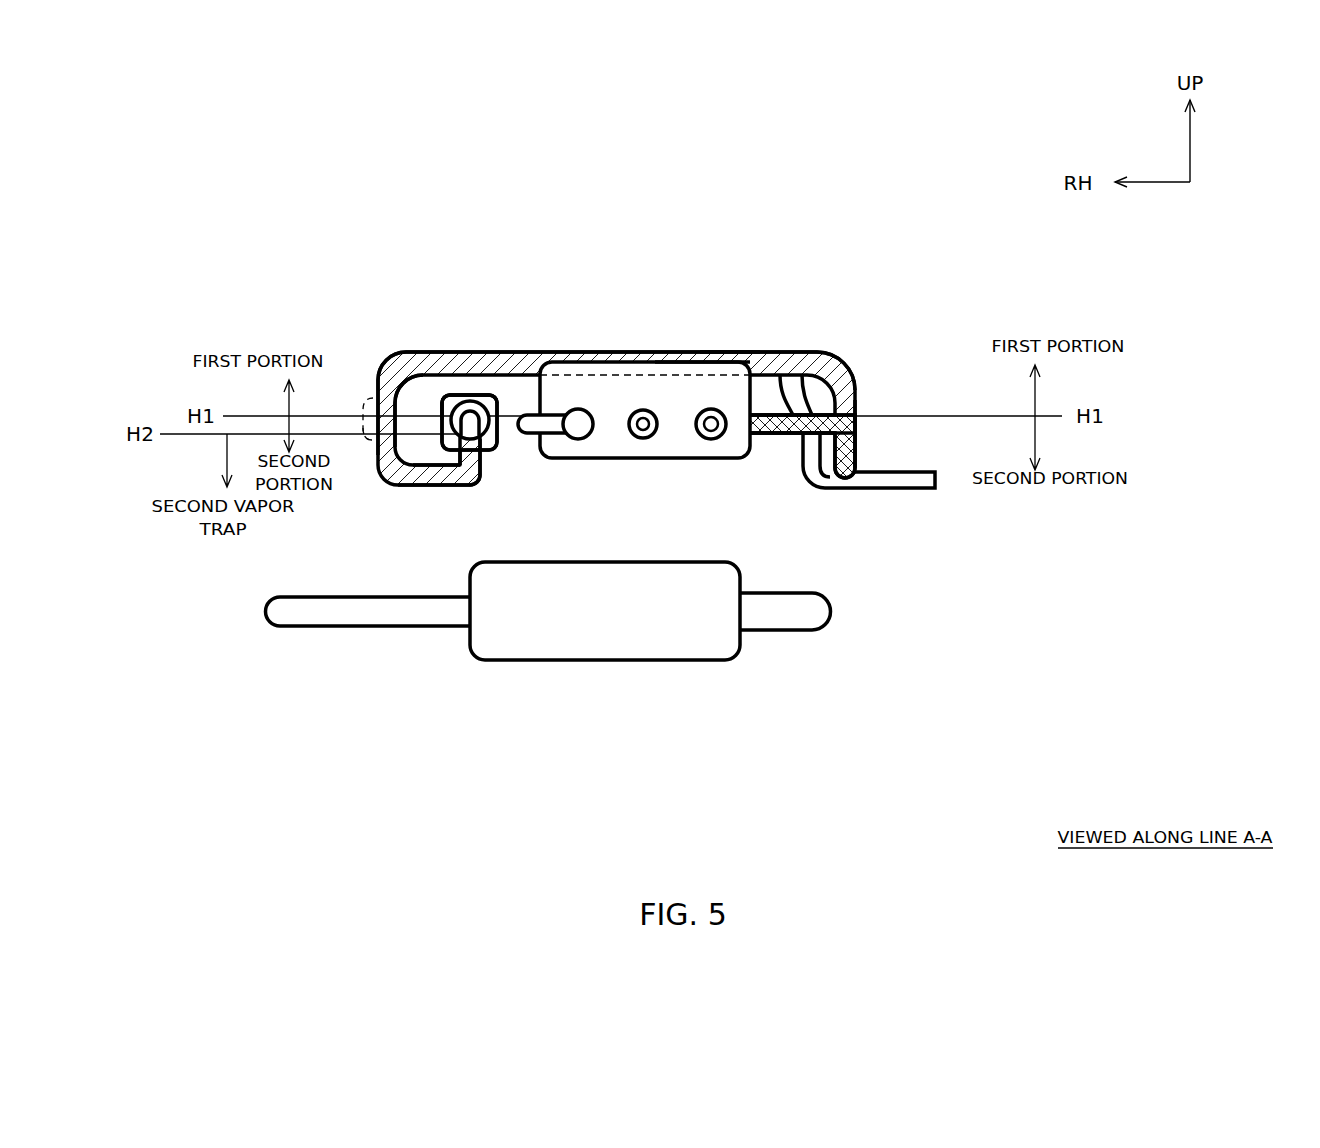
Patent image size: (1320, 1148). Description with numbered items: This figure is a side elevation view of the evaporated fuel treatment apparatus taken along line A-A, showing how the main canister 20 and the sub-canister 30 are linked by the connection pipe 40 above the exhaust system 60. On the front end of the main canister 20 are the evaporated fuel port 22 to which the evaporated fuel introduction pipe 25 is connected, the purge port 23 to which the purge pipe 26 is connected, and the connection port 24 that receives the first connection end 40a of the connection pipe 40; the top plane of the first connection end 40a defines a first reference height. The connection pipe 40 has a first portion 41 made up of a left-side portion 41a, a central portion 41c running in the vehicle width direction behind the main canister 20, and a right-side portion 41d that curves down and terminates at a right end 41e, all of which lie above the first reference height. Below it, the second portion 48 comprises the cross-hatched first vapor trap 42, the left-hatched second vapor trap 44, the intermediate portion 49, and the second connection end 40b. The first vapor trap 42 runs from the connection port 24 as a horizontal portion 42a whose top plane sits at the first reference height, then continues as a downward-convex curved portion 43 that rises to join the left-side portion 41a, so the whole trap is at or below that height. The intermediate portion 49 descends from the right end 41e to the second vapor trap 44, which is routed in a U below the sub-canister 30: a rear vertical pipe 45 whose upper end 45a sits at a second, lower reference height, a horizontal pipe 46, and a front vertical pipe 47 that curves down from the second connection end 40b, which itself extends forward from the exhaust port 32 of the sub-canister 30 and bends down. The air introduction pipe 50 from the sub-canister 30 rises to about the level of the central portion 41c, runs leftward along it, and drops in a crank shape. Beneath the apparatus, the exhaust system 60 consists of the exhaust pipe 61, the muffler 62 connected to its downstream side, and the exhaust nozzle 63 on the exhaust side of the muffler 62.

The main canister 20 is at (700, 462).
The evaporated fuel port 22 is at (578, 408).
The purge port 23 is at (680, 402).
The connection port 24 is at (716, 441).
The evaporated fuel introduction pipe 25 is at (527, 408).
The purge pipe 26 is at (648, 408).
The sub-canister 30 is at (498, 394).
The exhaust port 32 is at (474, 396).
The connection pipe 40 is at (598, 350).
The first connection end 40a is at (740, 434).
The second connection end 40b is at (455, 395).
The first portion 41 is at (627, 350).
The left-side portion 41a is at (837, 355).
The central portion 41c is at (723, 351).
The right-side portion 41d is at (378, 377).
The right end 41e is at (373, 407).
The first vapor trap 42 is at (779, 434).
The horizontal portion 42a is at (783, 424).
The curved portion 43 is at (848, 477).
The second vapor trap 44 is at (300, 742).
The rear vertical pipe 45 is at (376, 464).
The upper end 45a is at (371, 440).
The horizontal pipe 46 is at (407, 487).
The front vertical pipe 47 is at (482, 470).
The second portion 48 is at (762, 438).
The intermediate portion 49 is at (376, 388).
The air introduction pipe 50 is at (872, 471).
The exhaust system 60 is at (552, 700).
The exhaust pipe 61 is at (392, 627).
The muffler 62 is at (560, 662).
The exhaust nozzle 63 is at (790, 631).